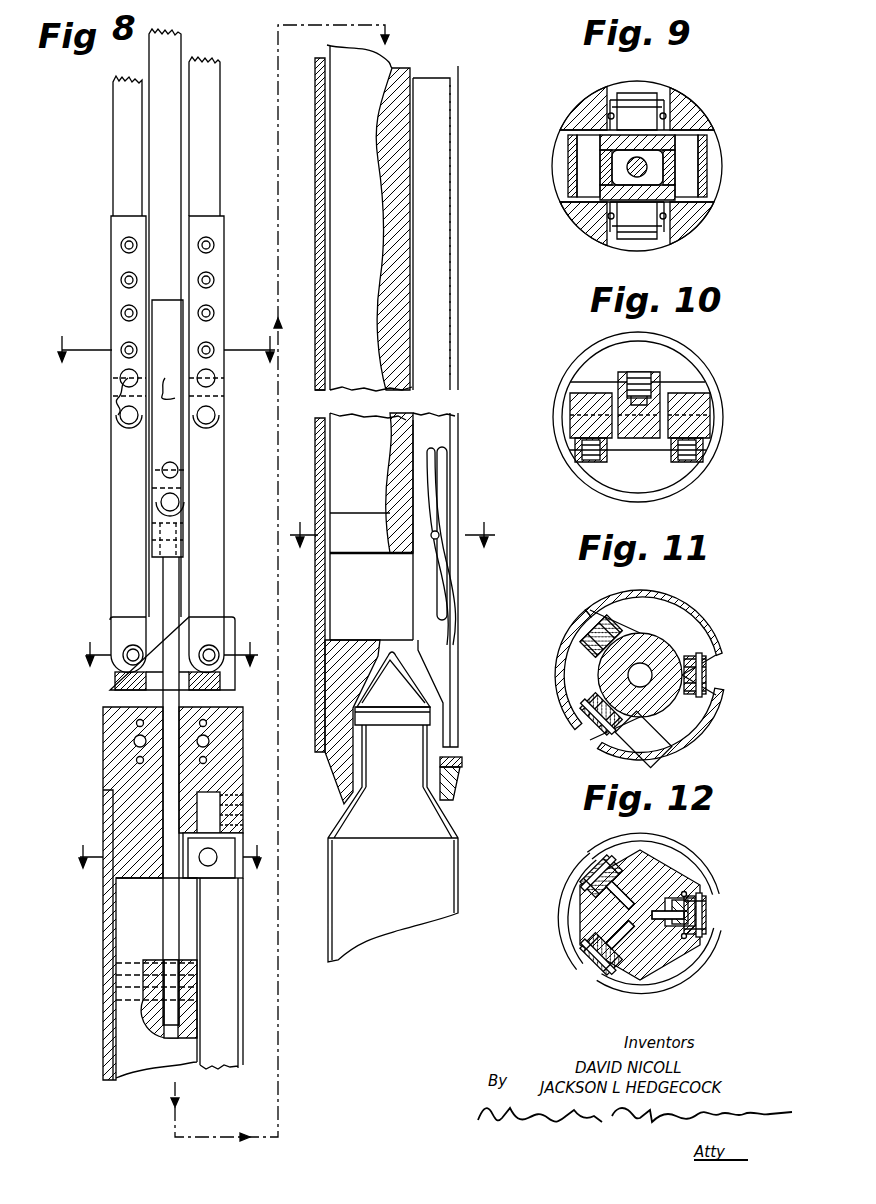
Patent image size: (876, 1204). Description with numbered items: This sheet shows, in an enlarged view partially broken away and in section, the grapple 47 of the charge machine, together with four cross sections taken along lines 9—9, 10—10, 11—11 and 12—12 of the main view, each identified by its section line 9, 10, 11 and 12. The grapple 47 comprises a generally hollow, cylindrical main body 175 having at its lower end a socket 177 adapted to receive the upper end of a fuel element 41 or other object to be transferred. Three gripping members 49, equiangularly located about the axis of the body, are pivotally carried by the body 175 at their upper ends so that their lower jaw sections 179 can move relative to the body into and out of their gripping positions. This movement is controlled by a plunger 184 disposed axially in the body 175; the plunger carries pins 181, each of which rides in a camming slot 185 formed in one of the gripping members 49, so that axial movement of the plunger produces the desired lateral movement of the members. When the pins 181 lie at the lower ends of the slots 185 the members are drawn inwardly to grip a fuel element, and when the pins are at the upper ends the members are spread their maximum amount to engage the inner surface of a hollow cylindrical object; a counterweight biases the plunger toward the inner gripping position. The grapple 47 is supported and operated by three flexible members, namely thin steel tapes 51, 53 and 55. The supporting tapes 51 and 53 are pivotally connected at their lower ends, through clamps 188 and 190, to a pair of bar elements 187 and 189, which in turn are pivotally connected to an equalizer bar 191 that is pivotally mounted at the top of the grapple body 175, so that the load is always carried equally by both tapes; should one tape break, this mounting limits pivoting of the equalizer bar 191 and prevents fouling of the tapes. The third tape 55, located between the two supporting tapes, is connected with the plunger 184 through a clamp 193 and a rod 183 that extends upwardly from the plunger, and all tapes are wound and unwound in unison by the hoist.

In FIG. 8, the fuel element 41 is at (388, 757).
In FIG. 8, the grapple 47 is at (443, 638).
In FIG. 8, the gripping members 49 is at (445, 345).
In FIG. 11, the gripping members 49 is at (602, 616).
In FIG. 12, the gripping members 49 is at (605, 853).
In FIG. 8, the flexible member 51 is at (125, 137).
In FIG. 10, the flexible member 51 is at (590, 395).
In FIG. 8, the flexible member 53 is at (205, 136).
In FIG. 10, the flexible member 53 is at (692, 412).
In FIG. 8, the third tape 55 is at (160, 58).
In FIG. 10, the third tape 55 is at (660, 386).
In FIG. 8, the main body 175 is at (233, 757).
In FIG. 9, the main body 175 is at (690, 112).
In FIG. 10, the main body 175 is at (692, 478).
In FIG. 11, the main body 175 is at (700, 722).
In FIG. 12, the main body 175 is at (690, 858).
In FIG. 8, the socket 177 is at (357, 697).
In FIG. 8, the jaw sections 179 is at (455, 760).
In FIG. 8, the pins 181 is at (440, 532).
In FIG. 12, the pins 181 is at (640, 870).
In FIG. 8, the rod 183 is at (172, 920).
In FIG. 9, the rod 183 is at (643, 165).
In FIG. 11, the rod 183 is at (648, 668).
In FIG. 8, the plunger 184 is at (395, 432).
In FIG. 8, the camming slot 185 is at (431, 489).
In FIG. 8, the bar element 187 is at (125, 509).
In FIG. 9, the bar element 187 is at (567, 168).
In FIG. 8, the clamp 188 is at (125, 258).
In FIG. 10, the clamp 188 is at (576, 434).
In FIG. 8, the bar element 189 is at (205, 522).
In FIG. 9, the bar element 189 is at (710, 168).
In FIG. 12, the bar element 189 is at (690, 978).
In FIG. 8, the clamp 190 is at (210, 297).
In FIG. 10, the clamp 190 is at (704, 434).
In FIG. 8, the equalizer bar 191 is at (215, 689).
In FIG. 9, the equalizer bar 191 is at (608, 138).
In FIG. 10, the equalizer bar 191 is at (633, 452).
In FIG. 8, the clamp 193 is at (165, 380).
In FIG. 10, the clamp 193 is at (622, 392).
In FIG. 8, the section line 9— 9 is at (171, 644).
In FIG. 8, the section line 10— 10 is at (166, 339).
In FIG. 8, the section line 11— 11 is at (170, 847).
In FIG. 8, the section line 12— 12 is at (392, 526).